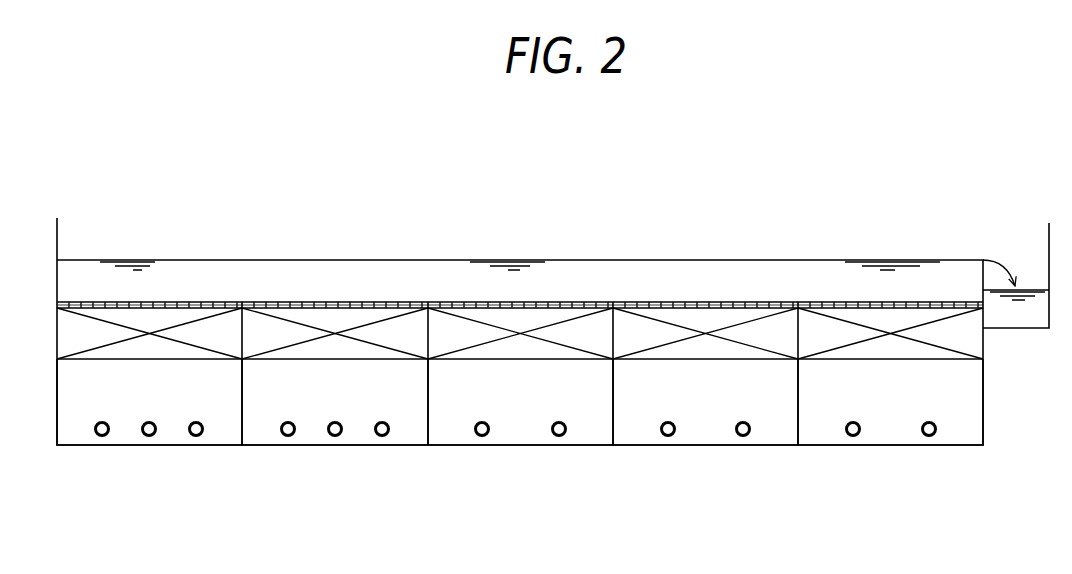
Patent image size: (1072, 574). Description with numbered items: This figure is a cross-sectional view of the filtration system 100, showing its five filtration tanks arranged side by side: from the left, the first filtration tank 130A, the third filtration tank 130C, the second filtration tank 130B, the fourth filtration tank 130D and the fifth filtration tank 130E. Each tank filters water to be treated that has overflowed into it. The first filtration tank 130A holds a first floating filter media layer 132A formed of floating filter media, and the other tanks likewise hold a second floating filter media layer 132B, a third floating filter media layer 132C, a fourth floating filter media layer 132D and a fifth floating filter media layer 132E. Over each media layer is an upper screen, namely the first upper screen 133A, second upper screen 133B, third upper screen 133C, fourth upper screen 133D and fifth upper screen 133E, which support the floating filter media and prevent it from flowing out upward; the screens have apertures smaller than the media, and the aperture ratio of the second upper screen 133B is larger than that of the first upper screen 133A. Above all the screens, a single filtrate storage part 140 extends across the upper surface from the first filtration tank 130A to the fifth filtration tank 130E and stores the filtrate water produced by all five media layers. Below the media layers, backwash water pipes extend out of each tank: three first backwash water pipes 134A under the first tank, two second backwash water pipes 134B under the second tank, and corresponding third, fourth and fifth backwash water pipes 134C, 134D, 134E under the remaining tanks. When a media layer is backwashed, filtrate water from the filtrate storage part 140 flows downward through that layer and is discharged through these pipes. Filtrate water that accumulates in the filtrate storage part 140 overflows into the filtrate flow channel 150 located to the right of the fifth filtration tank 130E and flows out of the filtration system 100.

The filtration system 100 is at (774, 176).
The first filtration tank 130A is at (82, 405).
The second filtration tank 130B is at (452, 405).
The third filtration tank 130C is at (262, 405).
The fourth filtration tank 130D is at (637, 405).
The fifth filtration tank 130E is at (824, 405).
The first floating filter media layer 132A is at (95, 337).
The second floating filter media layer 132B is at (453, 332).
The third floating filter media layer 132C is at (273, 335).
The fourth floating filter media layer 132D is at (642, 333).
The fifth floating filter media layer 132E is at (828, 335).
The first upper screen 133A is at (168, 305).
The second upper screen 133B is at (540, 305).
The third upper screen 133C is at (340, 305).
The fourth upper screen 133D is at (725, 305).
The fifth upper screen 133E is at (892, 305).
The first backwash water pipes 134A is at (102, 437).
The second backwash water pipes 134B is at (482, 437).
The third backwash water pipes 134C is at (288, 437).
The fourth backwash water pipes 134D is at (668, 437).
The fifth backwash water pipes 134E is at (853, 437).
The filtrate storage part 140 is at (593, 278).
The filtrate flow channel 150 is at (1013, 251).